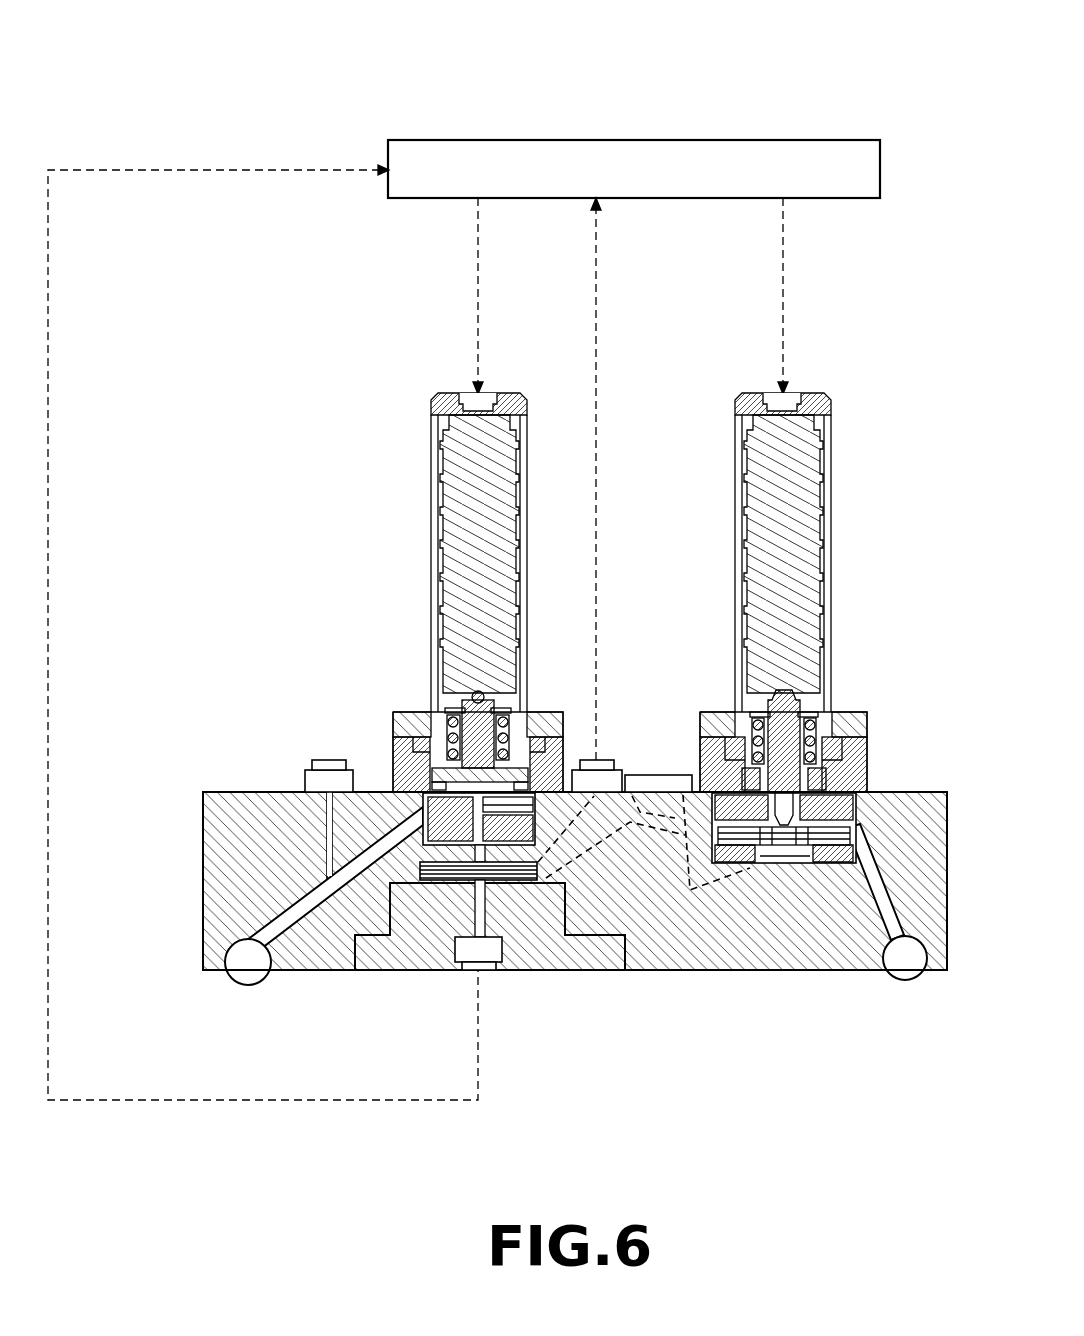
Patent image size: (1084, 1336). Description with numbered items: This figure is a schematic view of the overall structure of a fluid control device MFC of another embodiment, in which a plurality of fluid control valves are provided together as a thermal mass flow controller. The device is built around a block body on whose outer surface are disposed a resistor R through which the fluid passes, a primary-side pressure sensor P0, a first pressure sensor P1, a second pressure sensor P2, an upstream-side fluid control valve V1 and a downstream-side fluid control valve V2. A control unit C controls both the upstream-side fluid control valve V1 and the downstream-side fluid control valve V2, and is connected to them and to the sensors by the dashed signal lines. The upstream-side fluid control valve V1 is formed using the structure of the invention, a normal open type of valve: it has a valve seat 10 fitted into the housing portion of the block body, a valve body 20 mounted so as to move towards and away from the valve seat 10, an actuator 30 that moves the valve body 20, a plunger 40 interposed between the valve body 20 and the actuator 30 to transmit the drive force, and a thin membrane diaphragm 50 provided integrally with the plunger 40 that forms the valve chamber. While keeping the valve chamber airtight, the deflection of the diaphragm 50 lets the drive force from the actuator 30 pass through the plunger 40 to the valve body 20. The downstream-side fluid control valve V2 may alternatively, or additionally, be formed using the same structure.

The valve seat 10 is at (425, 800).
The valve body 20 is at (533, 777).
The actuator 30 is at (443, 443).
The plunger 40 is at (468, 695).
The diaphragm 50 is at (433, 745).
The control unit C is at (633, 140).
The upstream-side fluid control valve V1 is at (407, 378).
The downstream-side fluid control valve V2 is at (717, 378).
The primary-side pressure sensor P0 is at (317, 758).
The first pressure sensor P1 is at (490, 972).
The second pressure sensor P2 is at (605, 758).
The resistor R is at (440, 883).
The fluid control device MFC is at (153, 110).